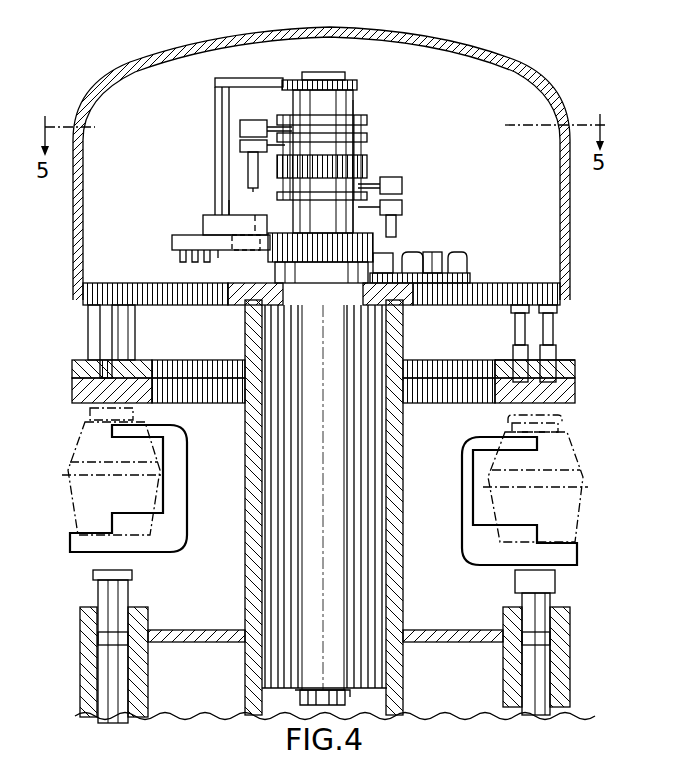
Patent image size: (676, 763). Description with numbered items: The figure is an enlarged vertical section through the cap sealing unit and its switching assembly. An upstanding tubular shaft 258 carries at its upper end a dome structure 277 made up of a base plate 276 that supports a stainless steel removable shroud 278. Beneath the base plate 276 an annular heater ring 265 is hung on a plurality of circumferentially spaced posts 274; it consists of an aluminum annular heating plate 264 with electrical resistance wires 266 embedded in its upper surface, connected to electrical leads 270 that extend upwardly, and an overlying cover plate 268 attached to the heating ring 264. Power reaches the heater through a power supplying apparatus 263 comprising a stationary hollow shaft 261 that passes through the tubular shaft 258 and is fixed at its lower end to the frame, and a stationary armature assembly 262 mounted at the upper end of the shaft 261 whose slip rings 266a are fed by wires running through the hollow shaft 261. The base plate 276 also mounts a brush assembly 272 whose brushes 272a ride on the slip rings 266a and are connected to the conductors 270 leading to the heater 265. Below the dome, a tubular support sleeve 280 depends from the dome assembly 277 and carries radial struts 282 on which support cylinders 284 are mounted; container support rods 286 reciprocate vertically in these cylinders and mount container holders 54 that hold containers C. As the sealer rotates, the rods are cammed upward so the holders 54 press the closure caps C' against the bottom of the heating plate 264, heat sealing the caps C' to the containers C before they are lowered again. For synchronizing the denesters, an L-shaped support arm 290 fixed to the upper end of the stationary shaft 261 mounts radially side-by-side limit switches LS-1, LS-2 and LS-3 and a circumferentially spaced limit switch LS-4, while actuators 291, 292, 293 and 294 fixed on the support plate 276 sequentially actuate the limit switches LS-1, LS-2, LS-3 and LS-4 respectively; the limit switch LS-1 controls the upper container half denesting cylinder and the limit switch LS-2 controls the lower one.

The dome structure 277 is at (538, 68).
The stationary armature assembly 262 is at (272, 70).
The power supplying apparatus 263 is at (402, 110).
The hollow shaft 261 is at (338, 72).
The L-shaped support arm 290 is at (215, 84).
The slip rings 266a is at (367, 137).
The brushes 272a is at (240, 129).
The brush assembly 272 is at (205, 158).
The limit switch LS-4 is at (250, 208).
The limit switch LS-2 is at (172, 248).
The limit switch LS-3 is at (183, 262).
The limit switch LS-1 is at (196, 258).
The actuator 293 is at (412, 252).
The actuator 291 is at (437, 252).
The actuator 292 is at (463, 262).
The base plate 276 is at (518, 296).
The removable shroud 278 is at (572, 242).
The actuator 294 is at (405, 300).
The posts 274 is at (97, 330).
The annular heating plate 264 is at (85, 395).
The cover plate 268 is at (577, 364).
The electrical resistance wires 266 is at (530, 350).
The electrical leads 270 is at (558, 320).
The annular heater ring 265 is at (578, 348).
The tubular support sleeve 280 is at (403, 430).
The upstanding tubular shaft 258 is at (345, 570).
The container C is at (351, 475).
The cap C' is at (560, 421).
The container holders 54 is at (577, 555).
The radial struts 282 is at (442, 635).
The support cylinders 284 is at (570, 624).
The container support rods 286 is at (537, 690).